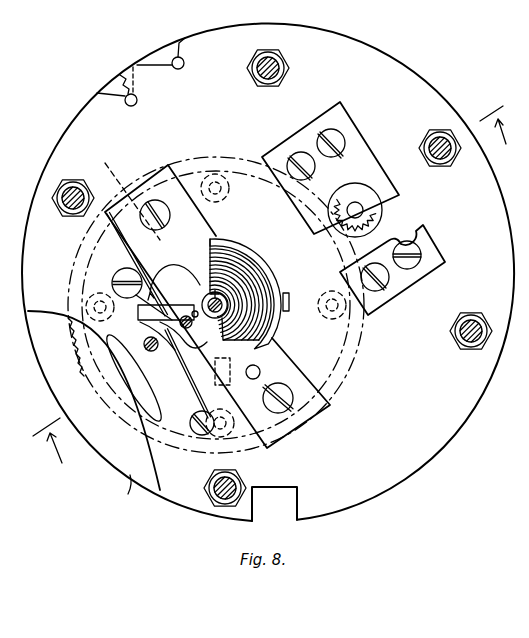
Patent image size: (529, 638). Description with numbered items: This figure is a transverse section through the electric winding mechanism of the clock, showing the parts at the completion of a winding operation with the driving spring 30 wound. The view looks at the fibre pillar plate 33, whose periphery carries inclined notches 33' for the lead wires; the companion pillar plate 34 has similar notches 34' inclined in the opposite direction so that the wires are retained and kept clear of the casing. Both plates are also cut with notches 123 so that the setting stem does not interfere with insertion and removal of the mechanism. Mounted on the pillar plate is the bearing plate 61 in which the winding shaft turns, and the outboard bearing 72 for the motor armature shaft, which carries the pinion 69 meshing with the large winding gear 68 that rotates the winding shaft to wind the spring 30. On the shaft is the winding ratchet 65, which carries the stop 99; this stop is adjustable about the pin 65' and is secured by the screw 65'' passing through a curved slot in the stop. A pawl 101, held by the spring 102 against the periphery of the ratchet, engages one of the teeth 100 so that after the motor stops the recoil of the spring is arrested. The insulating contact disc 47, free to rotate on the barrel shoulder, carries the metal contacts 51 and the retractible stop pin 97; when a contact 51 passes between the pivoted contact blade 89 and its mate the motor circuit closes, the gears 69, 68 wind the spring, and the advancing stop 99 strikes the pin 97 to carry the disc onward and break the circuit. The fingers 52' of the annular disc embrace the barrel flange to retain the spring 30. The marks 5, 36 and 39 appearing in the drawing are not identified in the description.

The section line indicator 5 is at (277, 291).
The driving spring 30 is at (278, 290).
The pillar plate 33 is at (275, 272).
The notches 33' is at (135, 96).
The pillar plate 34 is at (119, 490).
The notches 34' is at (153, 50).
The hex nut 36 is at (259, 78).
The bolt 39 is at (263, 86).
The insulating contact disc 47 is at (86, 263).
The metal contacts 51 is at (230, 191).
The fingers 52' is at (303, 296).
The bearing plate 61 is at (336, 378).
The winding ratchet 65 is at (174, 264).
The pin 65' is at (218, 316).
The screw 65'' is at (204, 299).
The large winding gear 68 is at (358, 250).
The pinion 69 is at (380, 220).
The outboard bearing 72 is at (367, 158).
The contact blade 89 is at (118, 274).
The retractible stop pin 97 is at (168, 348).
The stop 99 is at (147, 343).
The teeth 100 is at (262, 369).
The pawl 101 is at (150, 291).
The spring 102 is at (195, 380).
The notches 123 is at (302, 498).